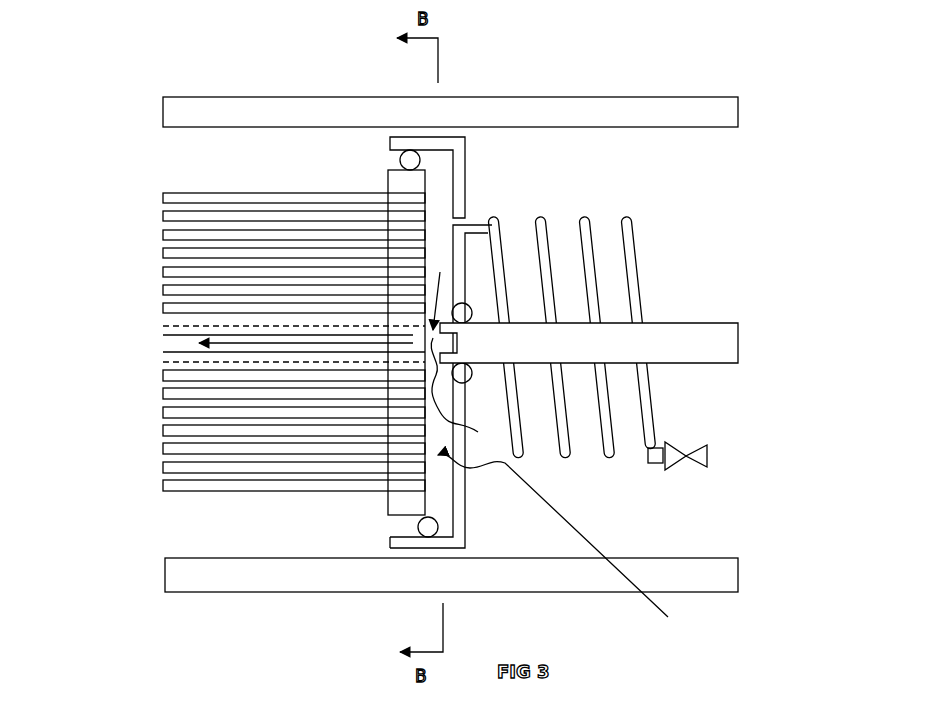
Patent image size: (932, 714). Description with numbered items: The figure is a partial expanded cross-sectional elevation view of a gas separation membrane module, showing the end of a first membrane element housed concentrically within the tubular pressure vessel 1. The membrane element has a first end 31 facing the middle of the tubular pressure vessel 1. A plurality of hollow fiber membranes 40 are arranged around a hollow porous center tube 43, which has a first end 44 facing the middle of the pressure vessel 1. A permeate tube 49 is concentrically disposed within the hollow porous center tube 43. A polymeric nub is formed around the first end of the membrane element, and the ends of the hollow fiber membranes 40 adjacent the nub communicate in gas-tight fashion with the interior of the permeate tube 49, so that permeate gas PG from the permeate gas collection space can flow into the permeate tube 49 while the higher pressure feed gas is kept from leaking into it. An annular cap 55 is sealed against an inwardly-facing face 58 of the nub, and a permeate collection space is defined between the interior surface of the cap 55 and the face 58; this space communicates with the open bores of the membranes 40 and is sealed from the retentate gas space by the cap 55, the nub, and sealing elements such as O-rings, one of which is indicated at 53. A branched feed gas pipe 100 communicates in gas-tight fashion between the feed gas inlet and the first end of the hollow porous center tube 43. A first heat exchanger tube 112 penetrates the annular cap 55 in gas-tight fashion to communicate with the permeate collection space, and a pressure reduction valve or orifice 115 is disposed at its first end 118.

The tubular pressure vessel 1 is at (258, 108).
The first end 31 is at (366, 534).
The hollow fiber membranes 40 is at (278, 250).
The hollow porous center tube 43 is at (217, 330).
The permeate tube 49 is at (237, 353).
The seal ring 53 is at (423, 521).
The annular cap 55 is at (468, 513).
The first end 44 is at (467, 390).
The inwardly-facing face 58 is at (563, 547).
The first heat exchanger tube 112 is at (630, 238).
The branched feed gas pipe 100 is at (690, 323).
The first end 118 is at (651, 479).
The pressure reduction valve or orifice 115 is at (683, 466).
The permeate gas PG is at (321, 345).